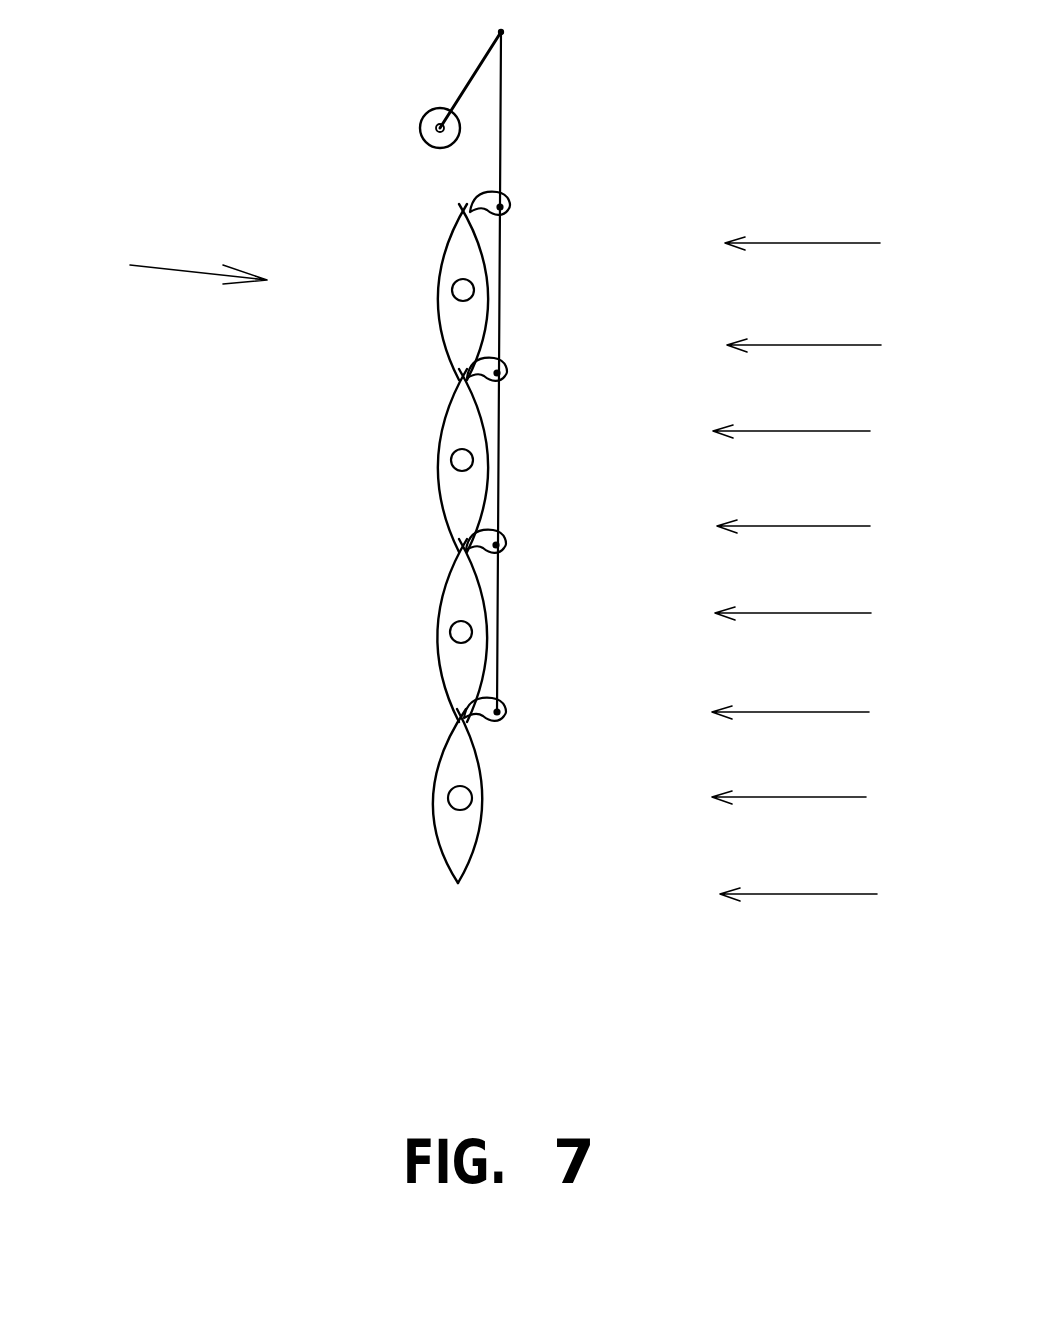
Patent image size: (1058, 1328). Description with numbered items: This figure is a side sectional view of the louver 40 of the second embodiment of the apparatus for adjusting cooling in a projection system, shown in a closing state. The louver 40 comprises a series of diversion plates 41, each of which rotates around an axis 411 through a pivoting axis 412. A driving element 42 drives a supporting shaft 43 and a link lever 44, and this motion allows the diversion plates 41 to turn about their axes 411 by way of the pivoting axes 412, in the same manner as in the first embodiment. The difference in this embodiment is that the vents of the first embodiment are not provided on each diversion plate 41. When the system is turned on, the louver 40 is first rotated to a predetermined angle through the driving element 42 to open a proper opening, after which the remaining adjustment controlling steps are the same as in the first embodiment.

The louver 40 is at (152, 264).
The diversion plate 41 is at (457, 240).
The axis 411 is at (455, 302).
The pivoting axis 412 is at (508, 198).
The driving element 42 is at (422, 116).
The supporting shaft 43 is at (472, 75).
The link lever 44 is at (502, 112).